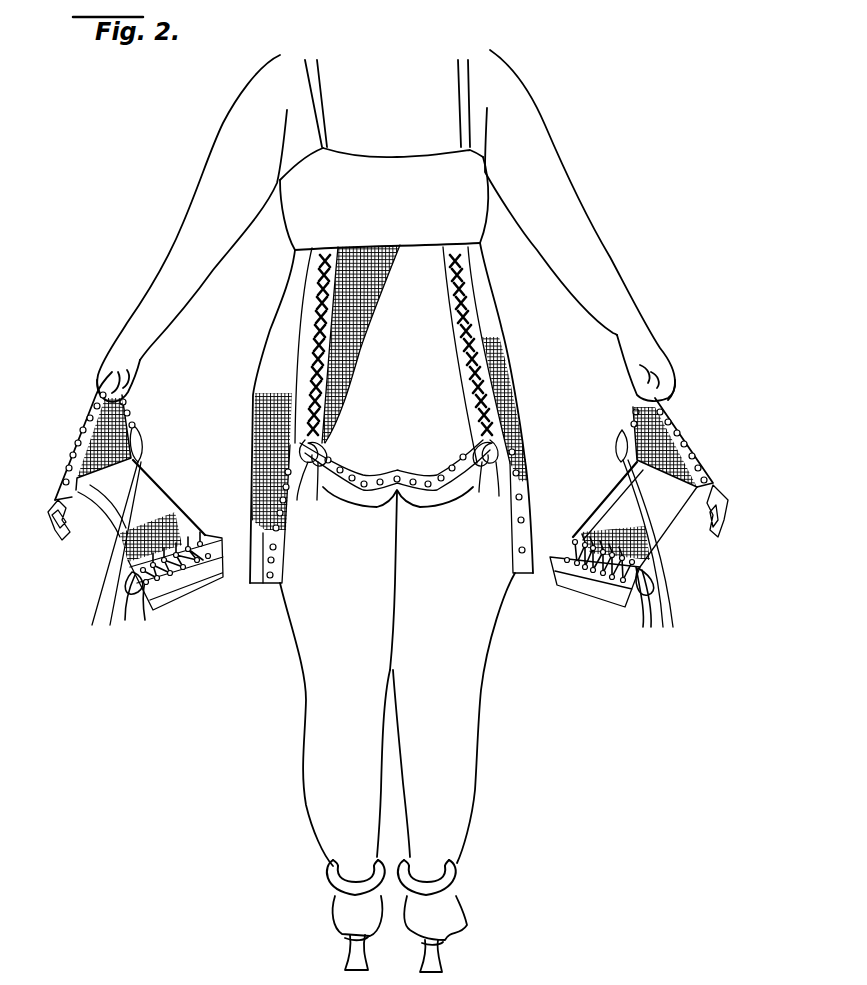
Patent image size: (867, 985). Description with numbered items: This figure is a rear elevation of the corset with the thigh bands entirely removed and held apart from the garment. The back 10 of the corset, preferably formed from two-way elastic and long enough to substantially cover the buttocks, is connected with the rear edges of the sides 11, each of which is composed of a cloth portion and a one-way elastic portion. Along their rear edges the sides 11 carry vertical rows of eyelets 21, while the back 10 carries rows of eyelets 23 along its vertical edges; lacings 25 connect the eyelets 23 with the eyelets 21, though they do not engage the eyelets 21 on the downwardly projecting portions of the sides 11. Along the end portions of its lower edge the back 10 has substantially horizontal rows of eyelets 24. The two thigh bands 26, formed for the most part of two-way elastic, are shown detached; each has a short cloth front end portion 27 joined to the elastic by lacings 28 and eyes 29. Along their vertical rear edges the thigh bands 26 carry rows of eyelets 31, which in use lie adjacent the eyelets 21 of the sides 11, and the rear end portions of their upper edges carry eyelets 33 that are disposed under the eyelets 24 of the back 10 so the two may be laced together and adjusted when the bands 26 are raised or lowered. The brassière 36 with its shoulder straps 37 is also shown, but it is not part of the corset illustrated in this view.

The back 10 is at (395, 367).
The sides 11 is at (277, 383).
The eyelets 21 is at (312, 311).
The eyelets 23 is at (453, 300).
The eyelets 24 is at (339, 465).
The lacings 25 is at (325, 338).
The thigh bands 26 is at (68, 477).
The front end portions 27 is at (187, 578).
The lacings 28 is at (178, 598).
The eyes 29 is at (208, 578).
The eyelets 31 is at (78, 453).
The eyelets 33 is at (131, 415).
The brassière 36 is at (384, 199).
The shoulder straps 37 is at (462, 125).